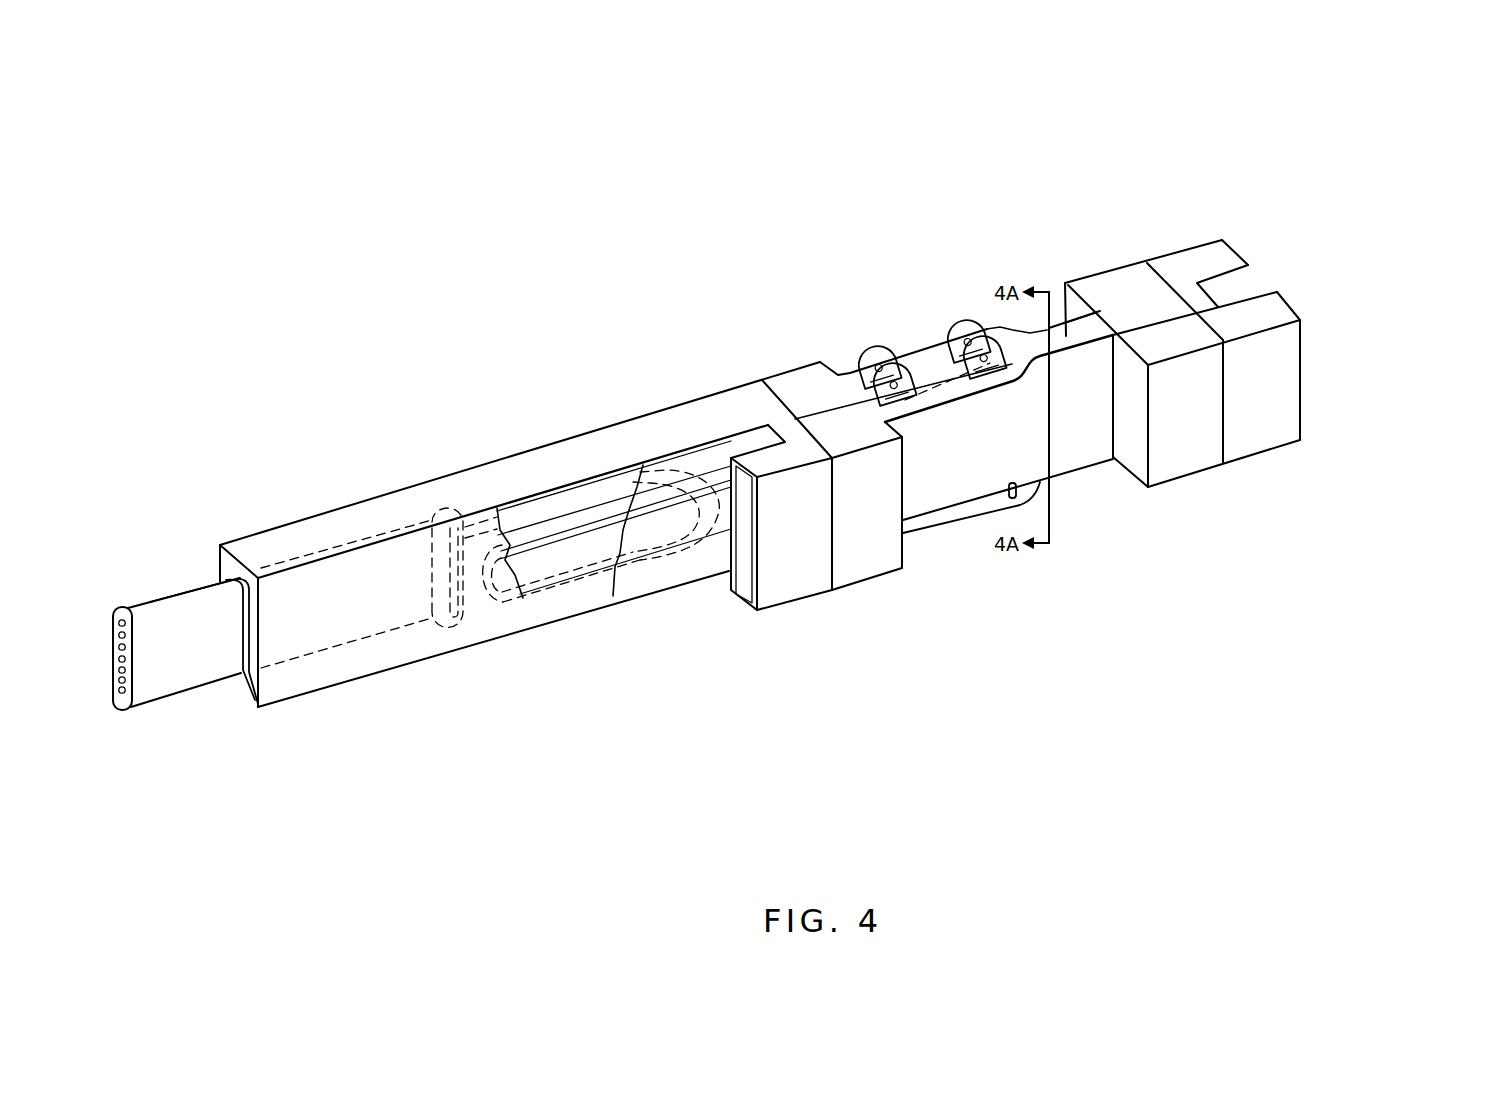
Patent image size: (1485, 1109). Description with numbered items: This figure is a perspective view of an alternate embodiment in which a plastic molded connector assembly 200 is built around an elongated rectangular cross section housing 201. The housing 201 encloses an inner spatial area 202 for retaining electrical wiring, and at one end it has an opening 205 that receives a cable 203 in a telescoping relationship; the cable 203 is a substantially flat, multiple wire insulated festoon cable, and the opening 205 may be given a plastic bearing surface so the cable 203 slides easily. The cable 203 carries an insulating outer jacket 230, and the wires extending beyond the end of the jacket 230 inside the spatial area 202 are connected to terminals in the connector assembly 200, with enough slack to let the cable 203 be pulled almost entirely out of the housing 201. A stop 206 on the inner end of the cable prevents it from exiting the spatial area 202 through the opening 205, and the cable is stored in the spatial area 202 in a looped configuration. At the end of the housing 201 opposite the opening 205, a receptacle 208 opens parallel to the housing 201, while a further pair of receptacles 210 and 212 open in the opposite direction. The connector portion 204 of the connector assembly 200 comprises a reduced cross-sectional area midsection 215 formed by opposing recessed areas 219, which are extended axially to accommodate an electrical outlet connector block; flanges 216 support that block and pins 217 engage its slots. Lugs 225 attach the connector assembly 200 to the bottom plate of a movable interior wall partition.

The connector assembly 200 is at (663, 356).
The housing 201 is at (520, 582).
The inner spatial area 202 is at (496, 606).
The cable 203 is at (150, 534).
The connector portion 204 is at (842, 435).
The opening 205 is at (293, 711).
The stop 206 is at (379, 509).
The receptacle 208 is at (733, 603).
The receptacle 210 is at (1245, 252).
The receptacle 212 is at (1300, 303).
The reduced cross-sectional area midsection 215 is at (960, 300).
The flanges 216 is at (963, 638).
The pins 217 is at (1027, 501).
The recessed areas 219 is at (1091, 449).
The lugs 225 is at (862, 323).
The insulating outer jacket 230 is at (151, 693).